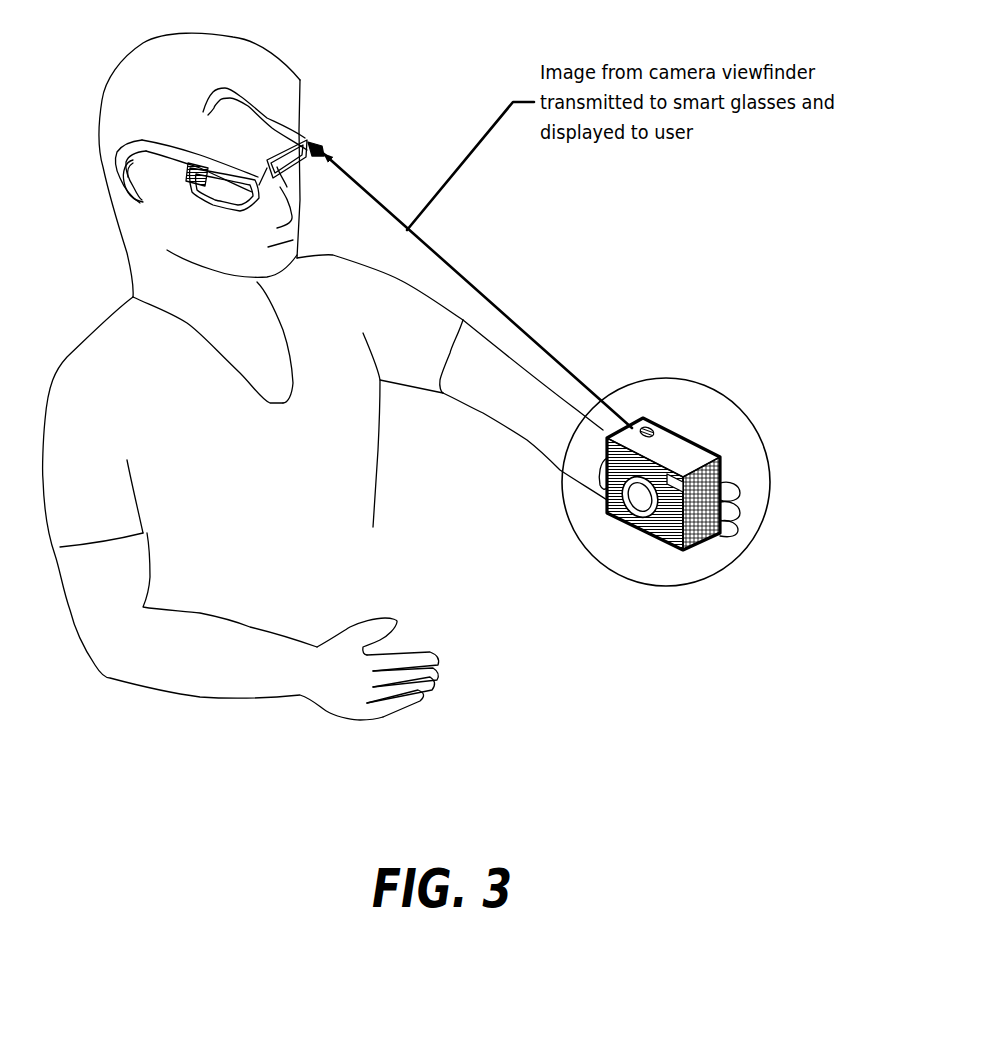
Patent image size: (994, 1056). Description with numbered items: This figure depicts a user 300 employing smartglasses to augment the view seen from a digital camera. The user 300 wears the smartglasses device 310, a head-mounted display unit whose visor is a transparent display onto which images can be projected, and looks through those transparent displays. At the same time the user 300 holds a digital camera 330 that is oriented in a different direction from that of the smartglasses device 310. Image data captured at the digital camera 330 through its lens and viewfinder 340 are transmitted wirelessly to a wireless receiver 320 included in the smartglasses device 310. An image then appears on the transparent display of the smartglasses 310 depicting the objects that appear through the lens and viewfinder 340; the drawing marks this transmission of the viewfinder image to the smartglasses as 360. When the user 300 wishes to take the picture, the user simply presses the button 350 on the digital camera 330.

The user 300 is at (100, 118).
The smartglasses 310 is at (204, 105).
The wireless receiver 320 is at (326, 152).
The digital camera 330 is at (700, 578).
The lens and viewfinder 340 is at (737, 481).
The button 350 is at (714, 490).
The image transmission to smart glasses 360 is at (562, 362).